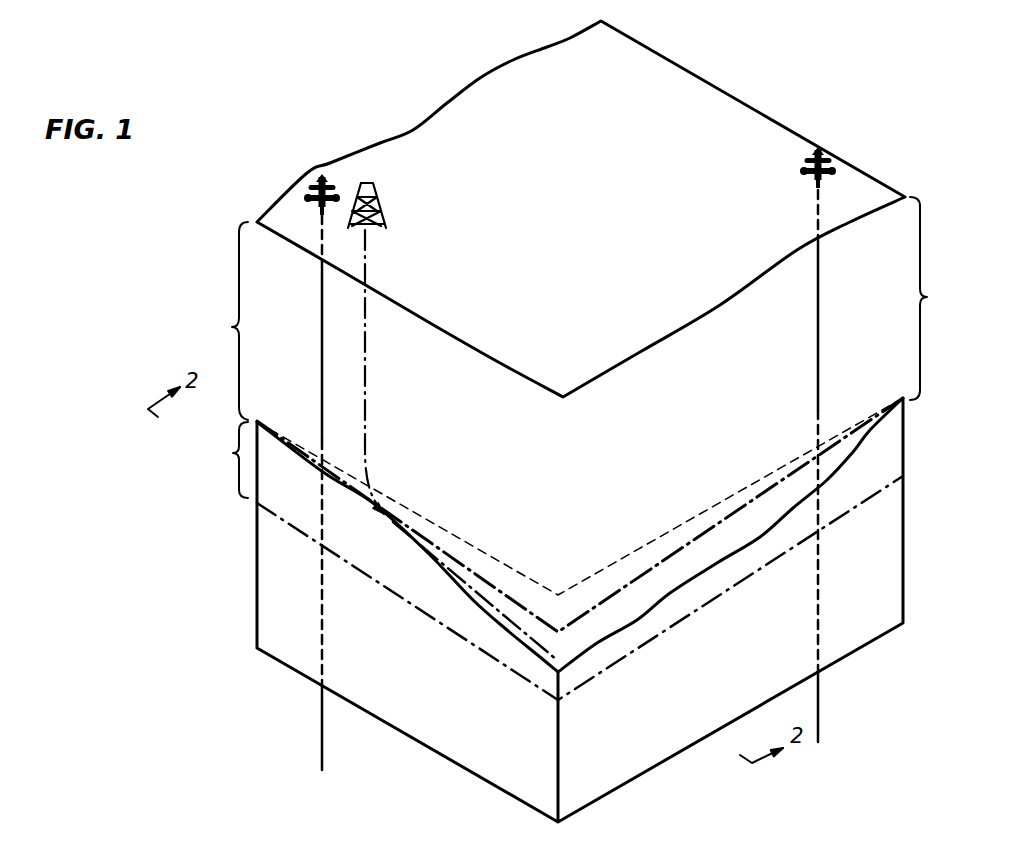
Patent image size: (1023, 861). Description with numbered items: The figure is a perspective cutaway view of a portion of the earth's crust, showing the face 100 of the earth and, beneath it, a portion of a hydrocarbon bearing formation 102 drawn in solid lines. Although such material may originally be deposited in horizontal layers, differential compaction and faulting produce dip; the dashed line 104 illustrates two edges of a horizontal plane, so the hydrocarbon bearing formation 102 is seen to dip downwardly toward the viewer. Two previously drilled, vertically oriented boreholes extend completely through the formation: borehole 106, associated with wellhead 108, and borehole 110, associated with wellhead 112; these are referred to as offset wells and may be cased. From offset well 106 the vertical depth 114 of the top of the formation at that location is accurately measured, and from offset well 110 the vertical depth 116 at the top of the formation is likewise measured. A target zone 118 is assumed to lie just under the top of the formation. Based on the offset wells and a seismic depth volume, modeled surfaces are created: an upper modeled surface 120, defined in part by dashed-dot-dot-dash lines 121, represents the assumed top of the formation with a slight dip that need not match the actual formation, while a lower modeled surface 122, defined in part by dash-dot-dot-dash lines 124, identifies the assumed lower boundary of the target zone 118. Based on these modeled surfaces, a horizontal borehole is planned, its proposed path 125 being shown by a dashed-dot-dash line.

The face of the earth 100 is at (586, 139).
The hydrocarbon bearing formation 102 is at (339, 651).
The dashed line 104 is at (432, 522).
The borehole 106 is at (322, 297).
The wellhead 108 is at (313, 187).
The borehole 110 is at (820, 264).
The wellhead 112 is at (823, 168).
The vertical depth 114 is at (230, 327).
The vertical depth 116 is at (925, 298).
The target zone 118 is at (234, 453).
The upper modeled surface 120 is at (832, 388).
The dashed-dot-dot-dash lines 121 is at (497, 590).
The lower modeled surface 122 is at (868, 485).
The dash-dot-dot-dash lines 124 is at (537, 688).
The proposed path 125 is at (368, 421).